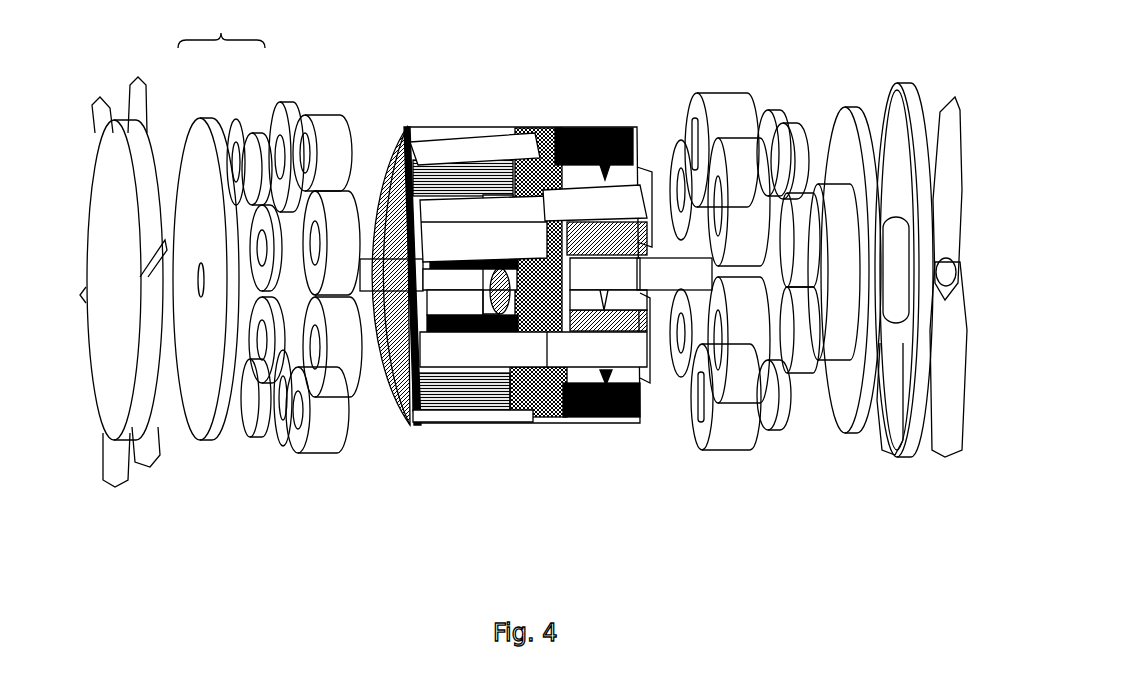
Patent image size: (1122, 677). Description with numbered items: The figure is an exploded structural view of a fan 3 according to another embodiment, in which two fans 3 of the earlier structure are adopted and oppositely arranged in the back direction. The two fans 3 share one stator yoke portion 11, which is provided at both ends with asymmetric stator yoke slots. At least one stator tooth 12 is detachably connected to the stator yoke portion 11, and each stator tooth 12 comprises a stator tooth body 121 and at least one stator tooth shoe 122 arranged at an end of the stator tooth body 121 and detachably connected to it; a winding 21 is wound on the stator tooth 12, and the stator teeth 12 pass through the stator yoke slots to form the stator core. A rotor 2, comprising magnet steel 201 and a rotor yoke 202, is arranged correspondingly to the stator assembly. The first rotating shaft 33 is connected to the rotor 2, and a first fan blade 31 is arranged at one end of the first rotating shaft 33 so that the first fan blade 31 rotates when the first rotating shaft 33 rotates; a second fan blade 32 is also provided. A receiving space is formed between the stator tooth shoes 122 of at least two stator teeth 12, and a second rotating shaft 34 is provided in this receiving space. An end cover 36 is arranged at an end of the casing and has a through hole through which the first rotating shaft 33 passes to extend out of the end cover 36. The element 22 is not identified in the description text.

The rotor 2 is at (221, 28).
The rotor yoke 202 is at (213, 130).
The magnet steel 201 is at (245, 130).
The winding 21 is at (322, 137).
The stator tooth 12 is at (512, 244).
The stator tooth shoe 122 is at (410, 143).
The stator tooth body 121 is at (468, 150).
The stator yoke portion 11 is at (525, 173).
The second planet gears 22 is at (728, 122).
The second fan blade 32 is at (115, 357).
The second rotating shaft 34 is at (375, 282).
The first rotating shaft 33 is at (665, 278).
The end cover 36 is at (917, 433).
The first fan blade 31 is at (943, 320).
The fan 3 is at (490, 500).